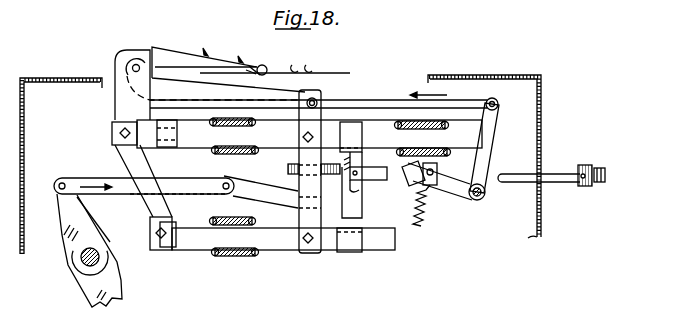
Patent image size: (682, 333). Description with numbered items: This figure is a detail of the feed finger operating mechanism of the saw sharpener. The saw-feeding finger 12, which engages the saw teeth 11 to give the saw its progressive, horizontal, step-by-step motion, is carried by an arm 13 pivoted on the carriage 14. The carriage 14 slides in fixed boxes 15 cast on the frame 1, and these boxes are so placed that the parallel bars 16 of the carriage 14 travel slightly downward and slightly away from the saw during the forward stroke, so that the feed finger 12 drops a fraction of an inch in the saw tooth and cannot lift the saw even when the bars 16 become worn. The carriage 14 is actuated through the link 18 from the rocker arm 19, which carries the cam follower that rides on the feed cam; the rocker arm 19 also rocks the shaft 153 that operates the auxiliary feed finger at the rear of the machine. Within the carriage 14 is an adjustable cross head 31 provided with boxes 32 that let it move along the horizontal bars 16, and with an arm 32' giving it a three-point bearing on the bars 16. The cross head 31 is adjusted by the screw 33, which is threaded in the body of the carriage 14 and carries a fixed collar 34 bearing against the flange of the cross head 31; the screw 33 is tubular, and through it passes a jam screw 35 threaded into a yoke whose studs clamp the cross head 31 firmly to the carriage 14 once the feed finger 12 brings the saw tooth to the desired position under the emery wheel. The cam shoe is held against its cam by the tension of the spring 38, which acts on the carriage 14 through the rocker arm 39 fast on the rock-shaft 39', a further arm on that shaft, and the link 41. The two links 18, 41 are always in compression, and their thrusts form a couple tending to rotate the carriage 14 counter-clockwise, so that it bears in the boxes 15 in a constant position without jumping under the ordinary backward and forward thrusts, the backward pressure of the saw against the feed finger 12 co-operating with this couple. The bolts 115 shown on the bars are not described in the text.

The frame 1 is at (61, 77).
The teeth 11 is at (290, 66).
The saw-feeding finger 12 is at (259, 66).
The arm 13 is at (160, 58).
The carriage 14 is at (126, 101).
The fixed boxes 15 is at (243, 150).
The parallel bars 16 is at (309, 185).
The link 18 is at (74, 179).
The rocker arm 19 is at (90, 224).
The cross head 31 is at (352, 202).
The boxes 32 is at (361, 198).
The arm 32' is at (148, 185).
The screw 33 is at (586, 164).
The fixed collar 34 is at (358, 170).
The jam screw 35 is at (601, 168).
The spring 38 is at (423, 217).
The rocker arm 39 is at (437, 191).
The rock-shaft 39' is at (493, 200).
The link 41 is at (373, 100).
The bolt 115 is at (436, 132).
The shaft 153 is at (82, 258).